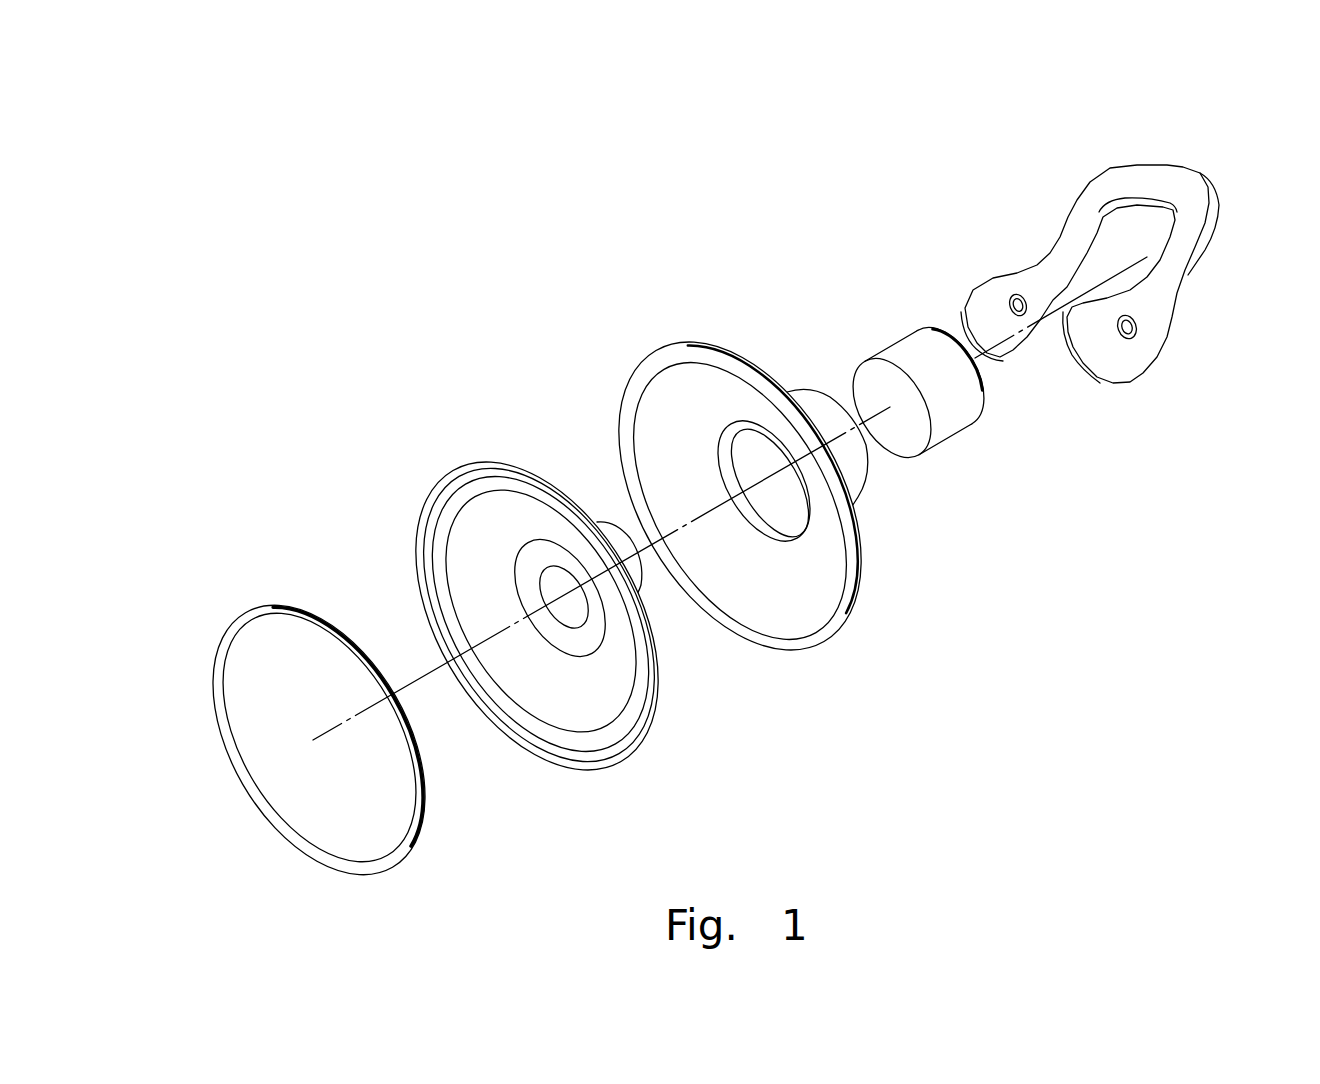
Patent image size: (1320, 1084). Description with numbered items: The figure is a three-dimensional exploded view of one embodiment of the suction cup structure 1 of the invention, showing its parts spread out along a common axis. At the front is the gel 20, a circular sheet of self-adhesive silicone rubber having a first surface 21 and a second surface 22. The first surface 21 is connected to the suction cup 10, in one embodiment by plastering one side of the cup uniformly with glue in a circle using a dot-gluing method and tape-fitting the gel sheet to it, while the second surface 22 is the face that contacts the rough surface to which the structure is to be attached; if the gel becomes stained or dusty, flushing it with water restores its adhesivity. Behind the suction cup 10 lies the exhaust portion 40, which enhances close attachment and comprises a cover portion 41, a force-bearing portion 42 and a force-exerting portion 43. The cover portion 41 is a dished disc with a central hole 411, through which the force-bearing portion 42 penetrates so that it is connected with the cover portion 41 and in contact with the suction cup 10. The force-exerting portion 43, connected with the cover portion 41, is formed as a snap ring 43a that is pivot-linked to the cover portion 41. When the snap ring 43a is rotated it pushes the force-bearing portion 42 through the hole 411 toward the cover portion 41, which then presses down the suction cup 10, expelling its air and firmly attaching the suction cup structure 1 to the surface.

The suction cup structure 1 is at (386, 310).
The suction cup 10 is at (456, 486).
The gel 20 is at (354, 734).
The first surface 21 is at (458, 795).
The second surface 22 is at (274, 870).
The exhaust portion 40 is at (918, 377).
The cover portion 41 is at (751, 461).
The hole 411 is at (792, 511).
The force-bearing portion 42 is at (957, 423).
The force-exerting portion 43 is at (1114, 222).
The snap ring 43a is at (1173, 185).